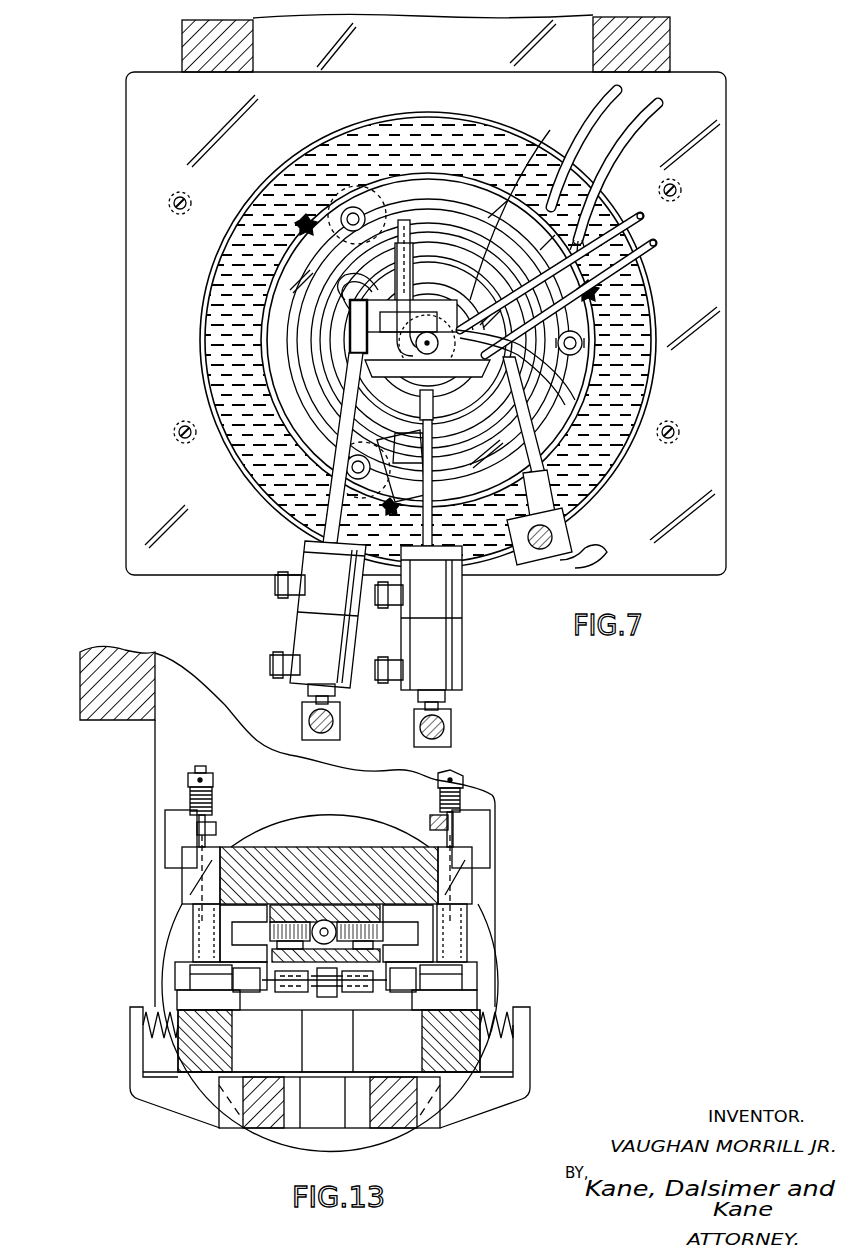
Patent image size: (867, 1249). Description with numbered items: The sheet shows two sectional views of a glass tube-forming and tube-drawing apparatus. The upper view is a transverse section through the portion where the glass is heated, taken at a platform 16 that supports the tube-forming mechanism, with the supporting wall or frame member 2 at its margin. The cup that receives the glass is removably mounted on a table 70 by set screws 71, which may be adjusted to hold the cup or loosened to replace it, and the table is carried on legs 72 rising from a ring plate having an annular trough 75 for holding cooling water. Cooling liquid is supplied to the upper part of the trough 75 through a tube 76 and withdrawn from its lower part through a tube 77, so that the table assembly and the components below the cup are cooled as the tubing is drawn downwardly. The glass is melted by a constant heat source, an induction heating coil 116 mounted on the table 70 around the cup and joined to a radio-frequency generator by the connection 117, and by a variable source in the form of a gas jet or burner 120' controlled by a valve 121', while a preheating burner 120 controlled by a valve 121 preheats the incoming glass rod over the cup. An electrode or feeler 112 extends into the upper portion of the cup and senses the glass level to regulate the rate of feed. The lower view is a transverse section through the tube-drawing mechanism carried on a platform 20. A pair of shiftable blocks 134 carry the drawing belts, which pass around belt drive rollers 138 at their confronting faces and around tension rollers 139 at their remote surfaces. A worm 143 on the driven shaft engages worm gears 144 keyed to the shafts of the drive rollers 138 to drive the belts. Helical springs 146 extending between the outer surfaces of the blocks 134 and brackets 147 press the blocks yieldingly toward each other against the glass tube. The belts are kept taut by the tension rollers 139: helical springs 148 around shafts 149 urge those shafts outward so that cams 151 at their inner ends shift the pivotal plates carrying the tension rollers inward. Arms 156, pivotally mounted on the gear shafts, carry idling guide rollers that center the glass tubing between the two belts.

In FIG. 7, the housing wall 2 is at (670, 43).
In FIG. 13, the housing wall 2 is at (78, 683).
In FIG. 7, the platform 16 is at (728, 338).
In FIG. 13, the platform 20 is at (497, 842).
In FIG. 7, the table 70 is at (345, 320).
In FIG. 7, the set screws 71 is at (305, 222).
In FIG. 7, the legs 72 is at (348, 200).
In FIG. 7, the annular trough 75 is at (600, 455).
In FIG. 7, the tube 76 is at (636, 118).
In FIG. 7, the tube 77 is at (614, 104).
In FIG. 7, the electrode or feeler 112 is at (520, 362).
In FIG. 7, the induction heating coil 116 is at (515, 202).
In FIG. 7, the connection to radio-frequency generator 117 is at (645, 218).
In FIG. 7, the preheating burner 120 is at (439, 247).
In FIG. 7, the gas jet or burner 120' is at (492, 462).
In FIG. 7, the valve 121 is at (304, 546).
In FIG. 7, the valve 121' is at (456, 583).
In FIG. 13, the shiftable blocks 134 is at (200, 1073).
In FIG. 13, the belt drive rollers 138 is at (290, 993).
In FIG. 13, the tension rollers 139 is at (253, 997).
In FIG. 13, the worm 143 is at (328, 921).
In FIG. 13, the worm gears 144 is at (293, 903).
In FIG. 13, the helical springs 146 is at (158, 1015).
In FIG. 13, the brackets 147 is at (130, 1040).
In FIG. 13, the helical springs 148 is at (190, 790).
In FIG. 13, the shafts 149 is at (200, 880).
In FIG. 13, the cams 151 is at (195, 958).
In FIG. 13, the arms 156 is at (330, 997).